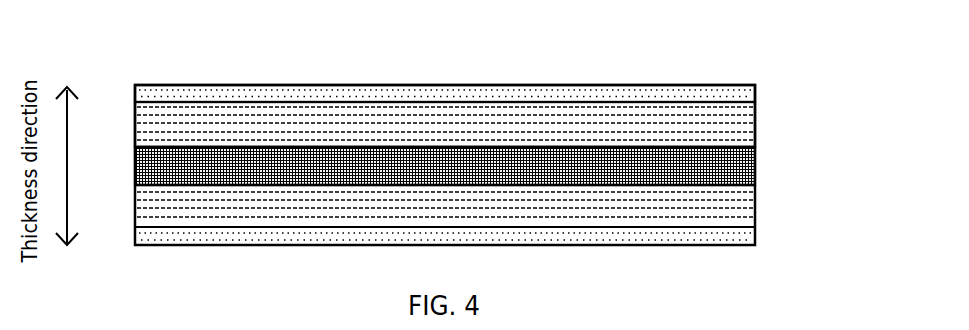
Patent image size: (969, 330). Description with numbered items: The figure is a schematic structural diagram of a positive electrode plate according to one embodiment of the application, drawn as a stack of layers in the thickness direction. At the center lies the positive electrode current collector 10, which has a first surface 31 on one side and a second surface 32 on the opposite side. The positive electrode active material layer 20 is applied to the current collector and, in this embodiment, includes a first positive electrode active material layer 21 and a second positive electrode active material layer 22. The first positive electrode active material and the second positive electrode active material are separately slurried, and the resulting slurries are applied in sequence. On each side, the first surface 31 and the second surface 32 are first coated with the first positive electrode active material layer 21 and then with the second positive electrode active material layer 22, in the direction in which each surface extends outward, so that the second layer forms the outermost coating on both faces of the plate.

The positive electrode current collector 10 is at (740, 172).
The positive electrode active material layer 20 is at (817, 90).
The first positive electrode active material layer 21 is at (740, 130).
The second positive electrode active material layer 22 is at (740, 93).
The first surface 31 is at (148, 147).
The second surface 32 is at (148, 185).